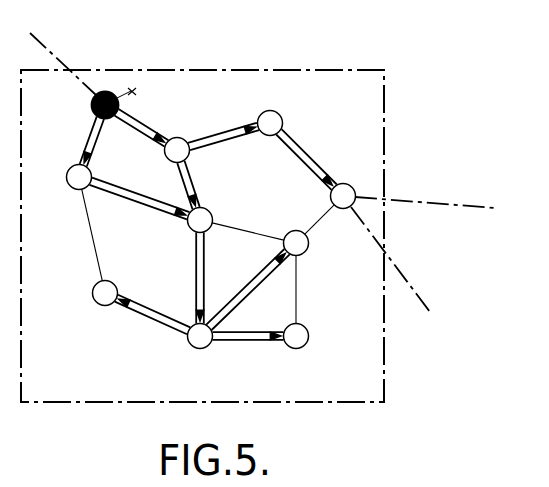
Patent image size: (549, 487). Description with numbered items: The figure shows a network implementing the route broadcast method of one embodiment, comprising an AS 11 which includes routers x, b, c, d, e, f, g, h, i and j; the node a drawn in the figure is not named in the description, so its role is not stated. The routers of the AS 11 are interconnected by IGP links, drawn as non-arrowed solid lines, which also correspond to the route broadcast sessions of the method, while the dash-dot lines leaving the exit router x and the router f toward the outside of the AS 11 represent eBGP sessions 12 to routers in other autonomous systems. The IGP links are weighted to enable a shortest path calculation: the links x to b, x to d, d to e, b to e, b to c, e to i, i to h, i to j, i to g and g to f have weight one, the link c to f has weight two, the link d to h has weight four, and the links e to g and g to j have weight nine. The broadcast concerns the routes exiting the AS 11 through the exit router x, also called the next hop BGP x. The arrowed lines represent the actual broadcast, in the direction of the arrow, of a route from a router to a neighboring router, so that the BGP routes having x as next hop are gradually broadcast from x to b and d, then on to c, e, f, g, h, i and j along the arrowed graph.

The AS 11 is at (385, 133).
The eBGP sessions 12 is at (42, 45).
The exit router x is at (126, 93).
The node a is at (105, 105).
The router b is at (177, 150).
The router c is at (270, 123).
The router d is at (79, 177).
The router e is at (200, 220).
The router f is at (343, 196).
The router g is at (296, 243).
The router h is at (105, 293).
The router i is at (200, 336).
The router j is at (296, 336).